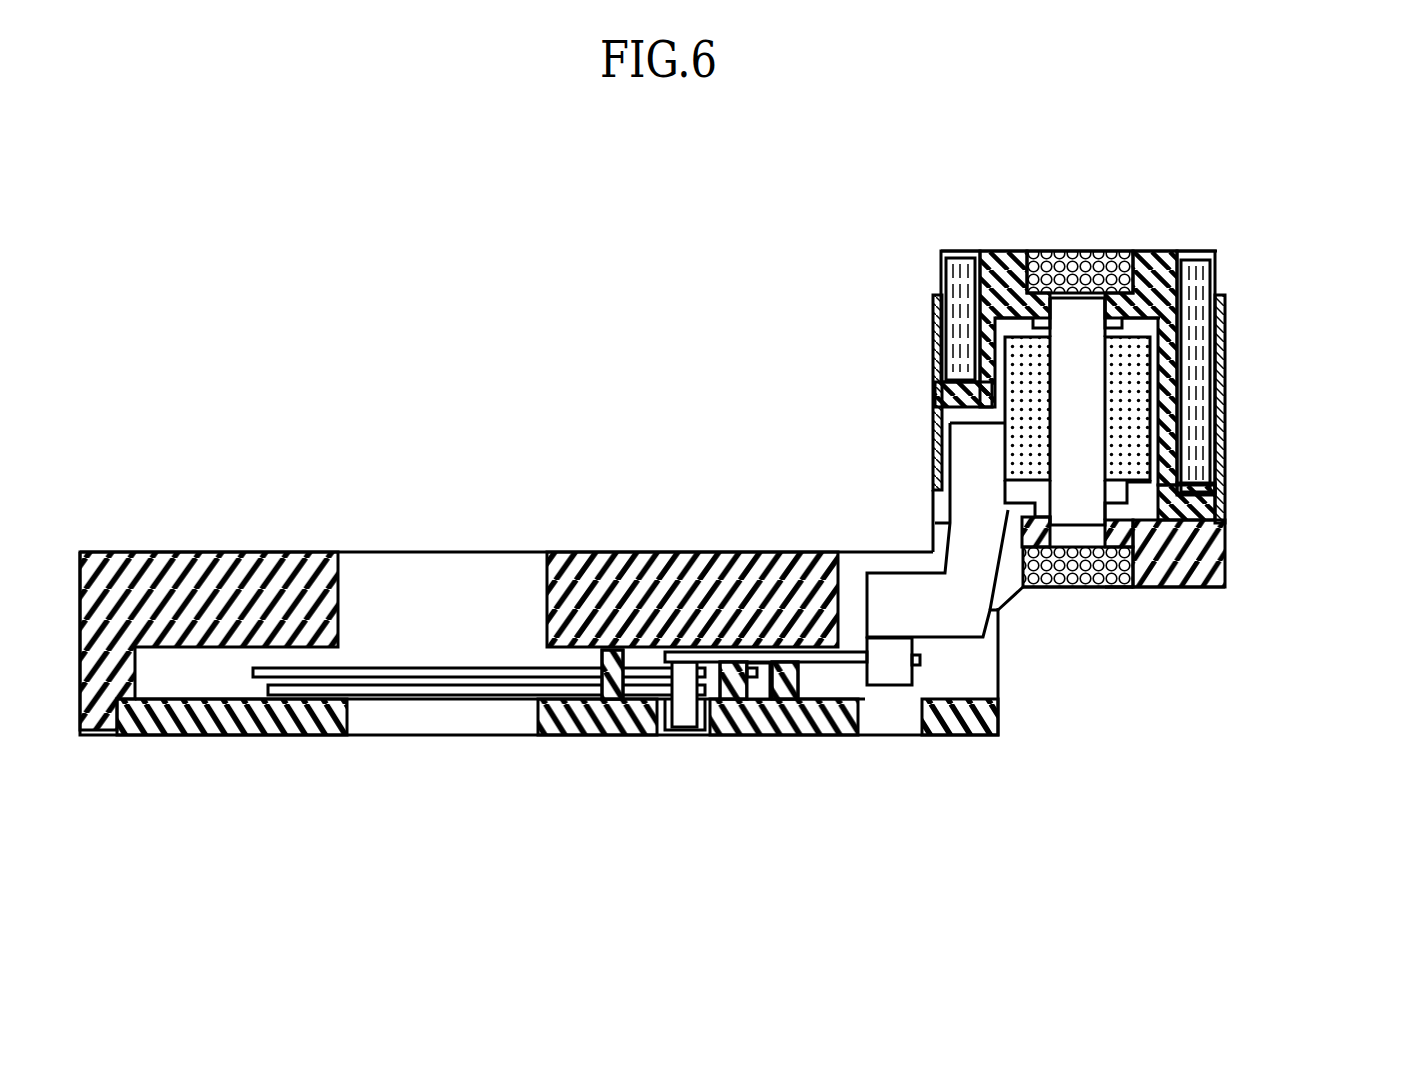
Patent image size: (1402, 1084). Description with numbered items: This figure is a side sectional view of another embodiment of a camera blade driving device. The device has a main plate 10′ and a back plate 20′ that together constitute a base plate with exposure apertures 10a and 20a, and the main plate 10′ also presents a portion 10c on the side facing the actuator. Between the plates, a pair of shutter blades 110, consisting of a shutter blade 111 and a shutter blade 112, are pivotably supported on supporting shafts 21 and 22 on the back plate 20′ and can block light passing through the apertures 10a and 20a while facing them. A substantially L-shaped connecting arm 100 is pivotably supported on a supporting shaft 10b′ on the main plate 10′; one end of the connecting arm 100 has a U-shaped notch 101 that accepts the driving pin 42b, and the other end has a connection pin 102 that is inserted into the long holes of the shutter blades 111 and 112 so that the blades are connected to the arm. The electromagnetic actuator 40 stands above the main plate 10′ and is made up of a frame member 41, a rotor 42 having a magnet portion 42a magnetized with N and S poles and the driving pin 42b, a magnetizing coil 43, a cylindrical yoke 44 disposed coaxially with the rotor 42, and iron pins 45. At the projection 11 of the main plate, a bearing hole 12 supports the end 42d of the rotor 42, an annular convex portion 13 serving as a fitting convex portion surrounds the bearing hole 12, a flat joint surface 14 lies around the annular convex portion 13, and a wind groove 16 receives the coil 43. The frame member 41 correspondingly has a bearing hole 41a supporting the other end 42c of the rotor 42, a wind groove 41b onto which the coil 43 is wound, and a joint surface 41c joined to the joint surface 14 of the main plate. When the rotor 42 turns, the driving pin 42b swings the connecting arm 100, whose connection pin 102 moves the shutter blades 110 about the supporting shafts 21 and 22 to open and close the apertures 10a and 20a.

The main plate 10′ is at (663, 545).
The exposure aperture 10a is at (340, 578).
The supporting shaft 10b′ is at (780, 700).
The base plate right wall portion 10c is at (845, 585).
The projection 11 is at (1215, 560).
The bearing hole 12 is at (1043, 588).
The annular convex portion 13 is at (1170, 480).
The joint surface 14 is at (1279, 512).
The wind groove 16 is at (1122, 587).
The back plate 20′ is at (587, 748).
The exposure aperture 20a is at (350, 737).
The supporting shaft 21 is at (735, 699).
The supporting shaft 22 is at (612, 695).
The electromagnetic actuator 40 is at (1165, 236).
The frame member 41 is at (1160, 510).
The bearing hole 41a is at (1033, 248).
The wind groove 41b is at (1128, 248).
The joint surface 41c is at (1222, 523).
The rotor 42 is at (1163, 387).
The magnet portion 42a is at (1130, 412).
The driving pin 42b is at (888, 670).
The end of the rotor 42c is at (1075, 315).
The end of the rotor 42d is at (1073, 520).
The magnetizing coil 43 is at (1088, 248).
The cylindrical yoke 44 is at (1217, 292).
The iron pins 45 is at (970, 248).
The connecting arm 100 is at (809, 645).
The U-shaped notch 101 is at (923, 658).
The connection pin 102 is at (678, 720).
The pair of shutter blades 110 is at (479, 760).
The shutter blade 111 is at (495, 677).
The shutter blade 112 is at (418, 695).